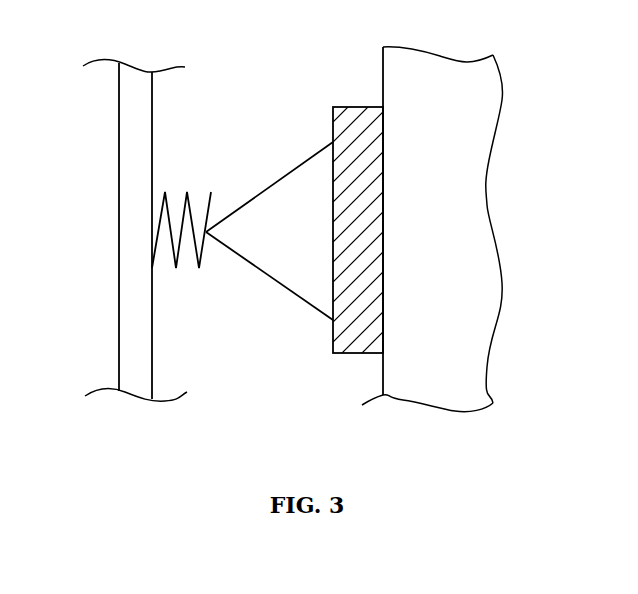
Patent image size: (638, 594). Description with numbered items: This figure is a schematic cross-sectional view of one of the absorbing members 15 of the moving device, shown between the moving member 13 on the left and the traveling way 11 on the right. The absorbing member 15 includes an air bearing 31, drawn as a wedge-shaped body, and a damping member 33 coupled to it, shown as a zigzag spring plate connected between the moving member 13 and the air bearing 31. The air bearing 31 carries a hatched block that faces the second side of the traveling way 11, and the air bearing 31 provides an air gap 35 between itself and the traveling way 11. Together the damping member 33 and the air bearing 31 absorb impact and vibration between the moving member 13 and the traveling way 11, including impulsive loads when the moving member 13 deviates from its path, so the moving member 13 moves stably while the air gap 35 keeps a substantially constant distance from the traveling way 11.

The traveling way 11 is at (490, 245).
The moving member 13 is at (119, 224).
The absorbing member 15 is at (262, 105).
The air bearing 31 is at (295, 293).
The damping member 33 is at (199, 268).
The air gap 35 is at (347, 360).